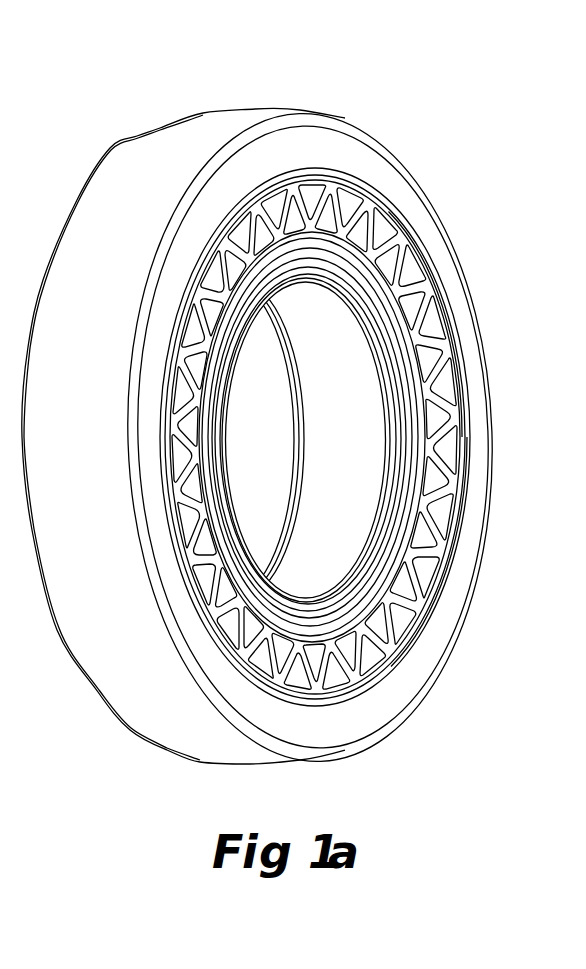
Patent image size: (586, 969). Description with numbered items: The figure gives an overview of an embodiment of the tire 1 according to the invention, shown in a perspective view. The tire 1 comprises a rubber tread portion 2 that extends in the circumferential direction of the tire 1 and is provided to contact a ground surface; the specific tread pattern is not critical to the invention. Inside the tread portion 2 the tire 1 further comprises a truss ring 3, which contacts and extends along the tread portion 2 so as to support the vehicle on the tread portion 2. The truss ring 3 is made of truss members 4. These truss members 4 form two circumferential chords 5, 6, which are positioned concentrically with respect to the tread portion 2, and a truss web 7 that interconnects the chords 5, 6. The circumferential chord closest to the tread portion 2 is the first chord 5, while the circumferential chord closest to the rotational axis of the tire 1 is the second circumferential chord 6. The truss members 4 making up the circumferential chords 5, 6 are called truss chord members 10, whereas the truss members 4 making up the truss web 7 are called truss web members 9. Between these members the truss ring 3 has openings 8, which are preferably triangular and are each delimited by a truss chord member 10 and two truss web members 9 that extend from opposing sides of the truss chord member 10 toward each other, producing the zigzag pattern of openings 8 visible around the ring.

The tire 1 is at (442, 135).
The rubber tread portion 2 is at (118, 272).
The truss ring 3 is at (455, 352).
The truss members 4 is at (453, 427).
The first circumferential chord 5 is at (462, 490).
The second circumferential chord 6 is at (413, 515).
The truss web 7 is at (468, 452).
The openings 8 is at (447, 397).
The truss web members 9 is at (432, 347).
The truss chord members 10 is at (390, 220).